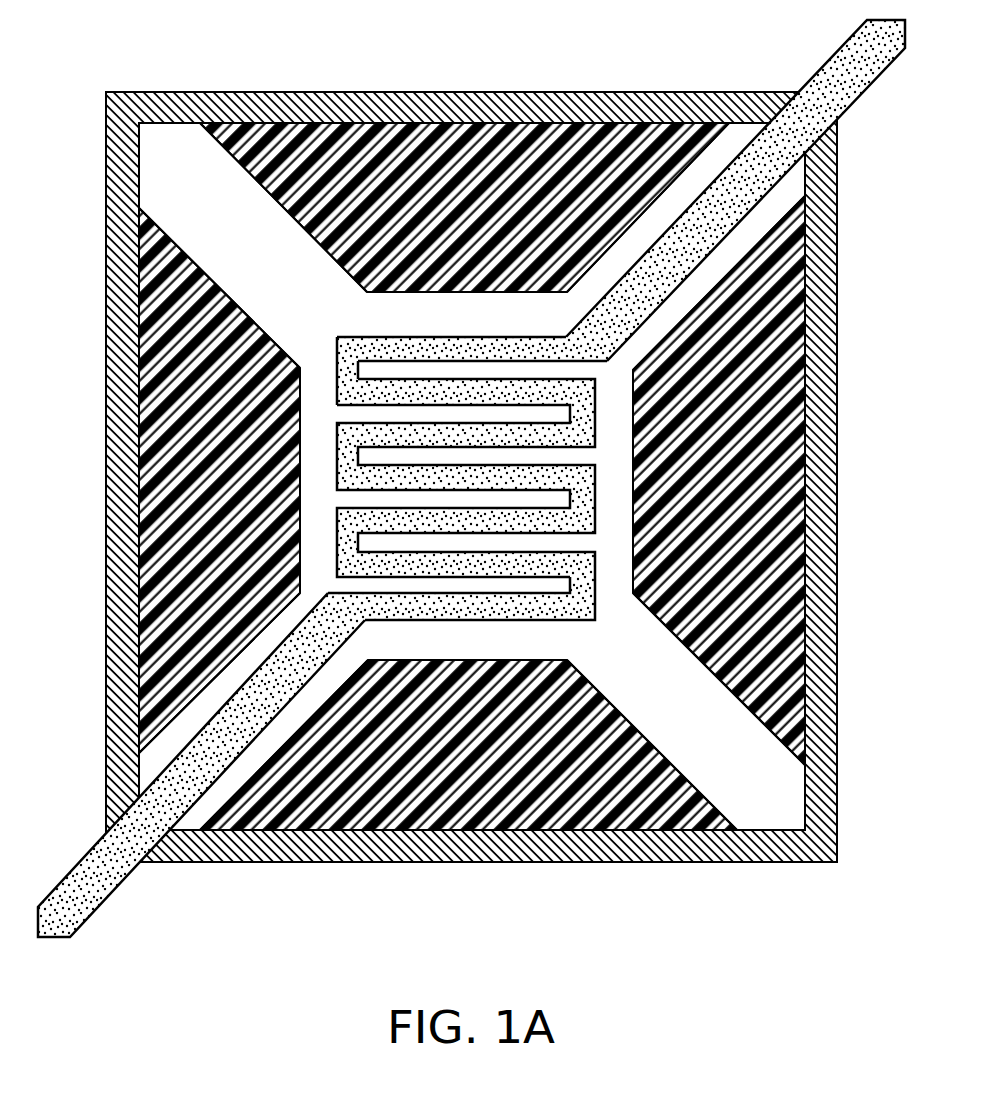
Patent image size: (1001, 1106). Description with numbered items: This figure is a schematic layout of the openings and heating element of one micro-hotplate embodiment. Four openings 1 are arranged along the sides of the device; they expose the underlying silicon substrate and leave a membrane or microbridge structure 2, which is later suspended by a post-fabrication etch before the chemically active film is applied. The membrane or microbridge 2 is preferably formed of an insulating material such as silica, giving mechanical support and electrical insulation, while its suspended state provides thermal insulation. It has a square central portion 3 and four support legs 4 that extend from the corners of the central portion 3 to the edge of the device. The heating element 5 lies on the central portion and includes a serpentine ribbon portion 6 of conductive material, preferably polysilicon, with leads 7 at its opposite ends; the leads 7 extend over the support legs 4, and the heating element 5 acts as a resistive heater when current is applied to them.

The opening 1 is at (583, 137).
The membrane or microbridge structure 2 is at (557, 652).
The square central portion 3 is at (443, 652).
The support leg 4 is at (205, 212).
The heating element 5 is at (492, 336).
The serpentine ribbon portion 6 is at (338, 385).
The lead 7 is at (727, 172).